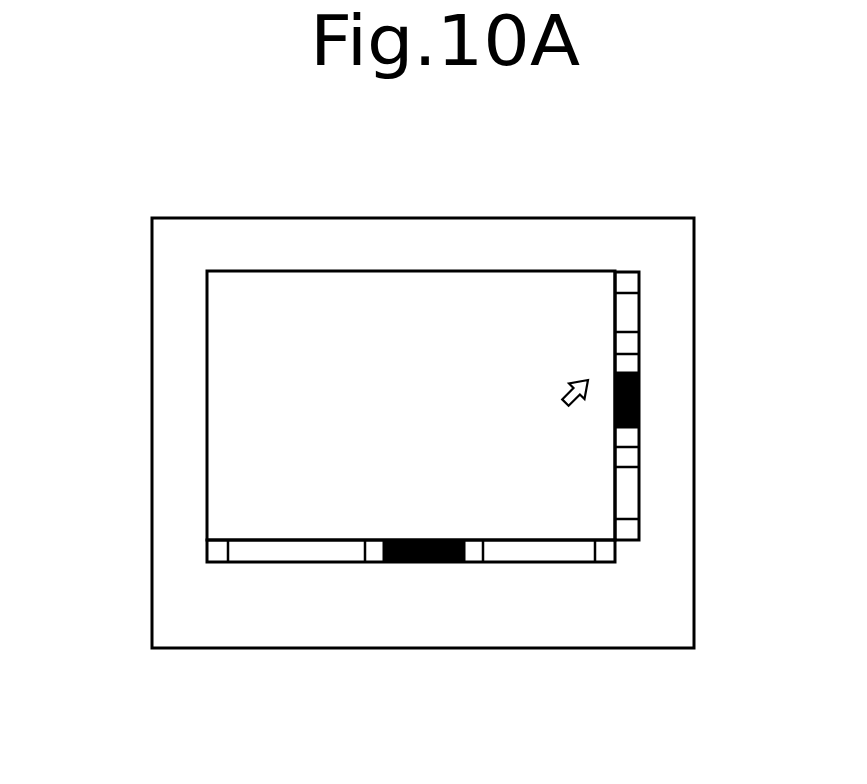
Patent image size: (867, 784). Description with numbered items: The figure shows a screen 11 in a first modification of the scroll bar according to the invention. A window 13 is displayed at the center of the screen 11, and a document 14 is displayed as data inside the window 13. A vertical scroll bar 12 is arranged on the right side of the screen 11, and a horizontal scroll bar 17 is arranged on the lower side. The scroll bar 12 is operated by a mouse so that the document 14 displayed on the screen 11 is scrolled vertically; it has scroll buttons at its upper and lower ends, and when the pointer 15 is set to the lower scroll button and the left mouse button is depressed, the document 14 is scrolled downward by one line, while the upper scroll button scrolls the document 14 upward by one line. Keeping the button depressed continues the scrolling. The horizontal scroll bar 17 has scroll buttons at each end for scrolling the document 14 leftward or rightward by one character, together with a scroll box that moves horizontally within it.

The screen 11 is at (518, 218).
The scroll bar 12 is at (640, 313).
The window 13 is at (331, 271).
The document 14 is at (235, 402).
The pointer 15 is at (577, 409).
The horizontal scroll bar 17 is at (560, 562).